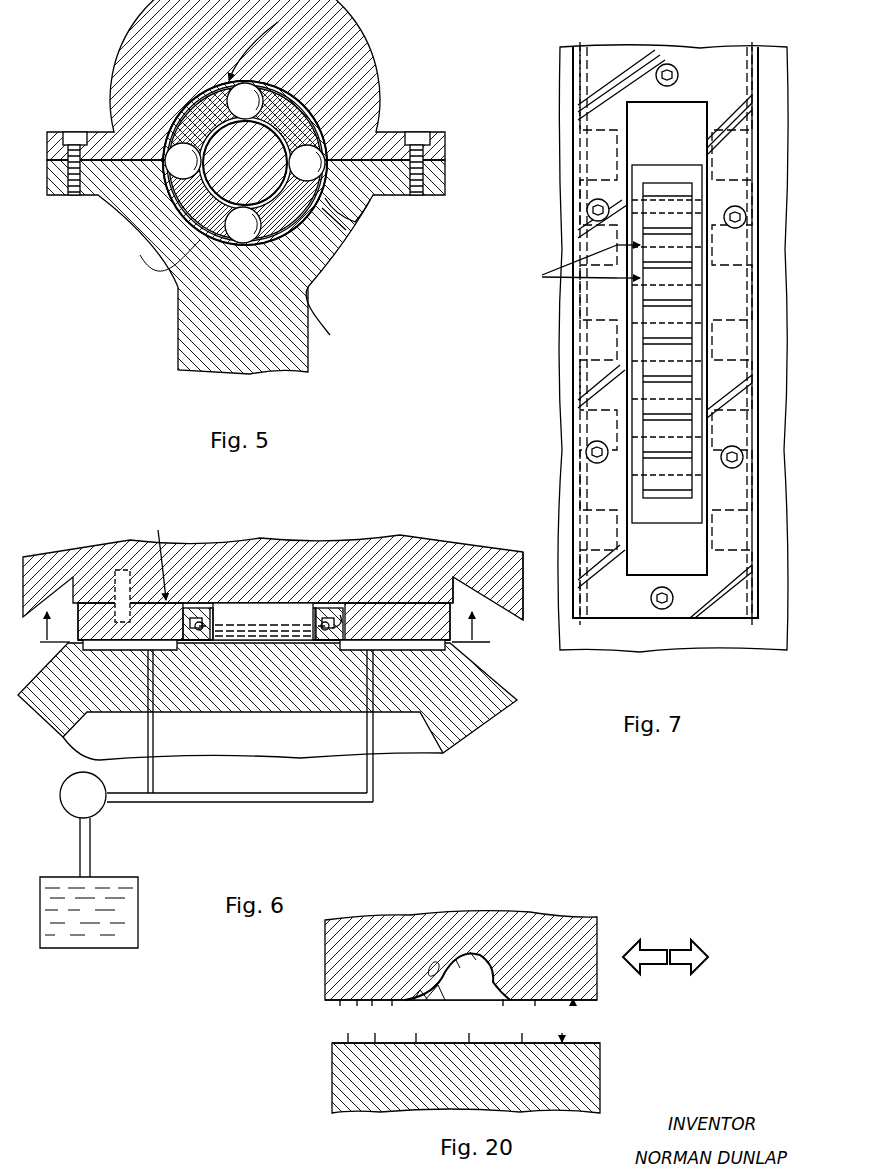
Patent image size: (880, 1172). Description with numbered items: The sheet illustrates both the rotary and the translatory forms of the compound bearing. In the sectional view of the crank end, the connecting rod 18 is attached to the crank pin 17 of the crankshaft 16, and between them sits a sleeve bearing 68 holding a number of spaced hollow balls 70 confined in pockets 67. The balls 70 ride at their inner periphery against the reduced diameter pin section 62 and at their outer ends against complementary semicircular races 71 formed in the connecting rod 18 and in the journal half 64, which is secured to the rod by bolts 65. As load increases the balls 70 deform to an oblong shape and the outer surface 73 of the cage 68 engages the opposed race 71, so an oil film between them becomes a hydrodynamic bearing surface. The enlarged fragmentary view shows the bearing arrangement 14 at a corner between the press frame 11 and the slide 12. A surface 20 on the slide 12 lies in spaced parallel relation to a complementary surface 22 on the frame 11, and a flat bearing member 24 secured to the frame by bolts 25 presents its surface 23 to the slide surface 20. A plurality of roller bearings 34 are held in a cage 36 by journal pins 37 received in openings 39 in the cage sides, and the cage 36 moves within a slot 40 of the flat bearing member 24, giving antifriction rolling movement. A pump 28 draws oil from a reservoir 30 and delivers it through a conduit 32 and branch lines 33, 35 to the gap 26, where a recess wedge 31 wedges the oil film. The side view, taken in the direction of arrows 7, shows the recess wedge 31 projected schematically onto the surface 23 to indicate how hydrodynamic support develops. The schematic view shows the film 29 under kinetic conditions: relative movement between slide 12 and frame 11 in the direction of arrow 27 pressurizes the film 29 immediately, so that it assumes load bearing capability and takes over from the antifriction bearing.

In FIG. 6, the press frame 11 is at (382, 545).
In FIG. 7, the press frame 11 is at (560, 440).
In FIG. 20, the press frame 11 is at (330, 1078).
In FIG. 6, the slide 12 is at (480, 720).
In FIG. 20, the slide 12 is at (502, 915).
In FIG. 6, the bearing arrangement 14 is at (158, 554).
In FIG. 7, the bearing arrangement 14 is at (577, 264).
In FIG. 5, the crankshaft 16 is at (261, 43).
In FIG. 5, the crank pin 17 is at (172, 128).
In FIG. 5, the connecting rod 18 is at (300, 358).
In FIG. 6, the surface 20 is at (325, 640).
In FIG. 6, the complementary surface 22 is at (455, 580).
In FIG. 6, the surface of flat bearing member 23 is at (240, 615).
In FIG. 7, the surface of flat bearing member 23 is at (585, 128).
In FIG. 6, the flat bearing member 24 is at (92, 610).
In FIG. 7, the flat bearing member 24 is at (590, 166).
In FIG. 6, the bolts 25 is at (122, 570).
In FIG. 7, the bolts 25 is at (668, 64).
In FIG. 6, the gap 26 is at (445, 648).
In FIG. 20, the arrow 27 is at (674, 950).
In FIG. 6, the pump 28 is at (95, 810).
In FIG. 20, the oil film 29 is at (580, 1025).
In FIG. 6, the reservoir 30 is at (125, 950).
In FIG. 6, the recess wedge 31 is at (190, 640).
In FIG. 7, the recess wedge 31 is at (575, 385).
In FIG. 20, the recess wedge 31 is at (430, 970).
In FIG. 6, the conduit 32 is at (318, 802).
In FIG. 6, the branch line 33 is at (367, 735).
In FIG. 6, the roller bearings 34 is at (252, 615).
In FIG. 7, the roller bearings 34 is at (685, 360).
In FIG. 6, the branch line 35 is at (148, 732).
In FIG. 6, the cage 36 is at (345, 620).
In FIG. 7, the cage 36 is at (703, 175).
In FIG. 6, the journal pins 37 is at (320, 612).
In FIG. 7, the journal pins 37 is at (700, 205).
In FIG. 6, the openings 39 is at (200, 640).
In FIG. 6, the slot 40 is at (195, 640).
In FIG. 7, the slot 40 is at (705, 115).
In FIG. 5, the reduced diameter pin section 62 is at (260, 172).
In FIG. 5, the journal half 64 is at (150, 78).
In FIG. 5, the bolts 65 is at (78, 132).
In FIG. 5, the pockets 67 is at (325, 313).
In FIG. 5, the sleeve bearing 68 is at (340, 235).
In FIG. 5, the balls 70 is at (312, 150).
In FIG. 5, the semicircular races 71 is at (346, 230).
In FIG. 5, the outer surface of cage 73 is at (200, 95).
In FIG. 6, the section line 7— 7 is at (259, 639).